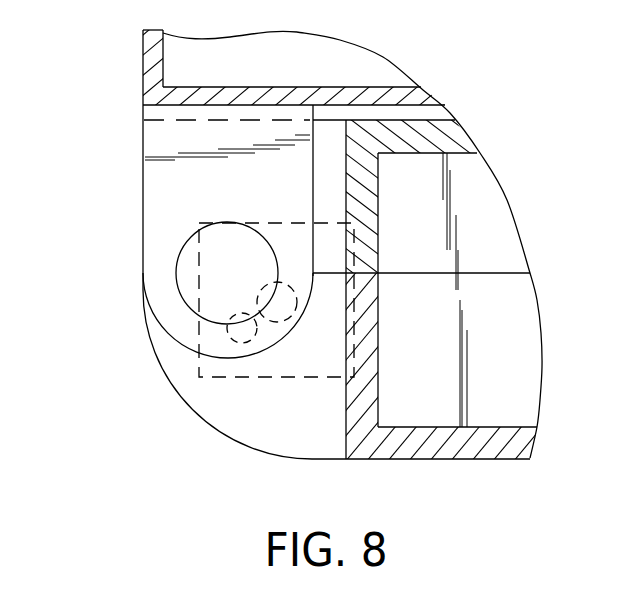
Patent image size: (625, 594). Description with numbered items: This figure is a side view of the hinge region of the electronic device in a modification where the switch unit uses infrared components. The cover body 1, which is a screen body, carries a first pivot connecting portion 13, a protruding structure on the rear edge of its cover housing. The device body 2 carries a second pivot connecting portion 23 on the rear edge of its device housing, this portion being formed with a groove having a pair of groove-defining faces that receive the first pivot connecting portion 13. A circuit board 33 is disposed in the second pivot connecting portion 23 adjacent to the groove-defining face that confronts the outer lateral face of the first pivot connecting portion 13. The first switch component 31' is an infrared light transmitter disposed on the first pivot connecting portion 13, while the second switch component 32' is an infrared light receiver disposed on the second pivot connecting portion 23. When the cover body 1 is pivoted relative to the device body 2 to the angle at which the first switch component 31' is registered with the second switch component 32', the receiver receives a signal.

The cover body 1 is at (150, 55).
The first pivot connecting portion 13 is at (157, 191).
The circuit board 33 is at (198, 273).
The second pivot connecting portion 23 is at (203, 390).
The first switch component 31' is at (222, 402).
The second switch component 32' is at (295, 397).
The device body 2 is at (420, 459).